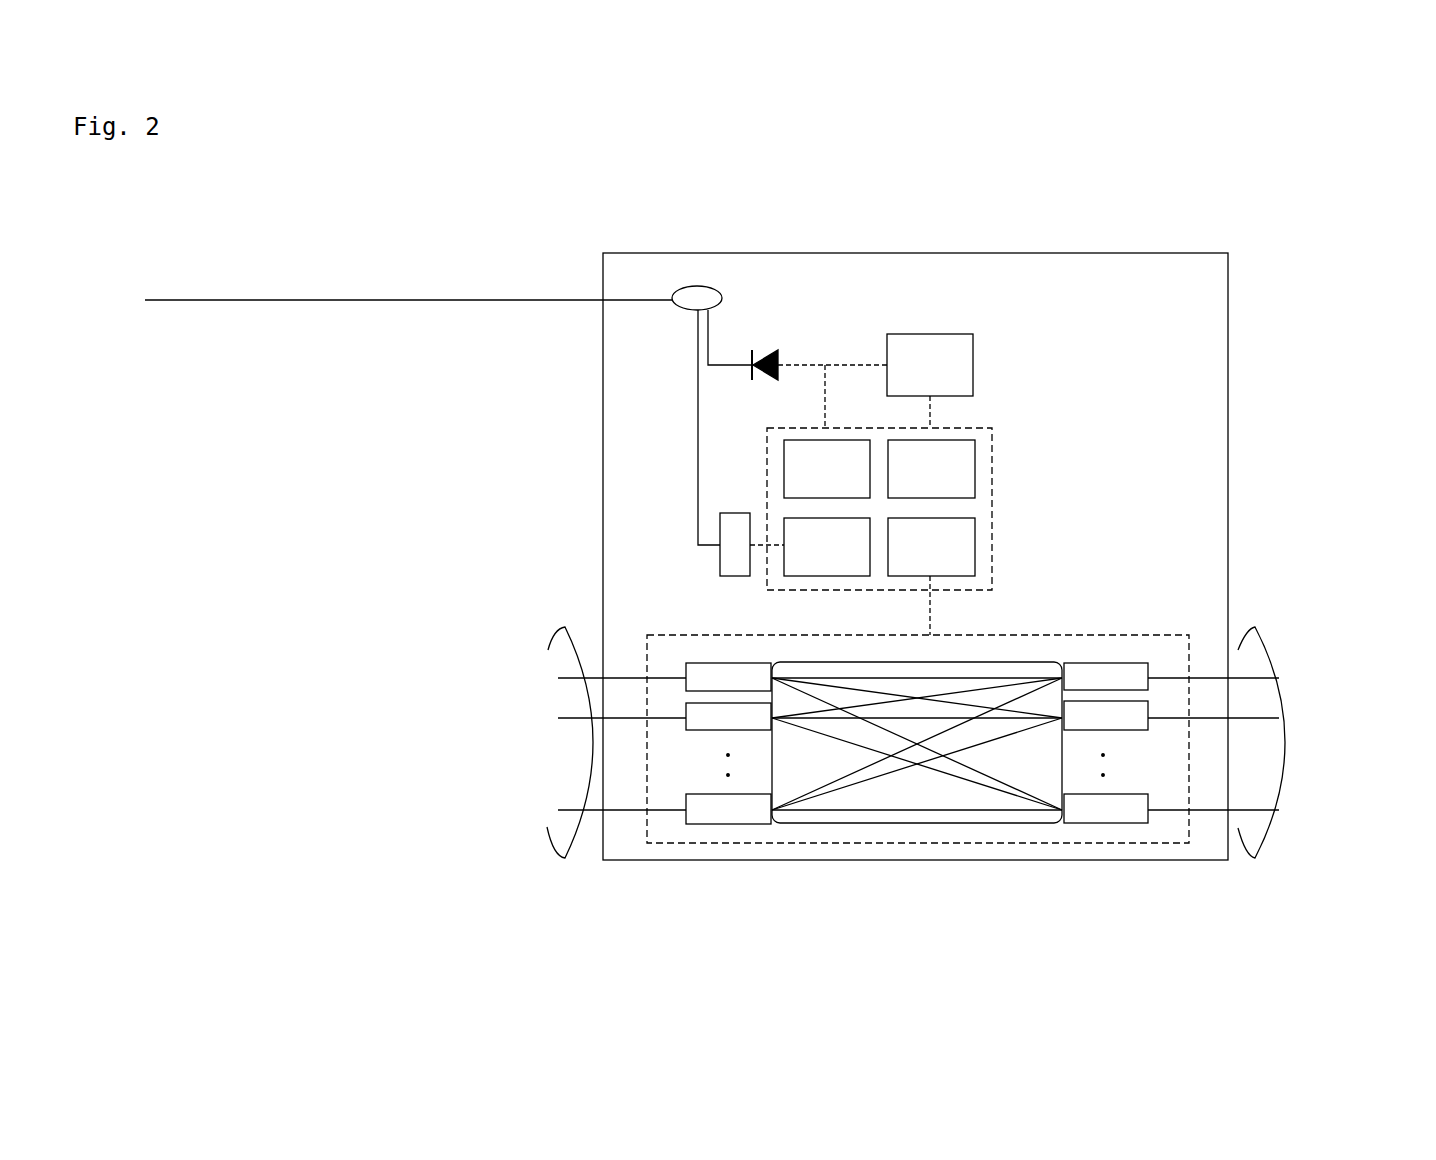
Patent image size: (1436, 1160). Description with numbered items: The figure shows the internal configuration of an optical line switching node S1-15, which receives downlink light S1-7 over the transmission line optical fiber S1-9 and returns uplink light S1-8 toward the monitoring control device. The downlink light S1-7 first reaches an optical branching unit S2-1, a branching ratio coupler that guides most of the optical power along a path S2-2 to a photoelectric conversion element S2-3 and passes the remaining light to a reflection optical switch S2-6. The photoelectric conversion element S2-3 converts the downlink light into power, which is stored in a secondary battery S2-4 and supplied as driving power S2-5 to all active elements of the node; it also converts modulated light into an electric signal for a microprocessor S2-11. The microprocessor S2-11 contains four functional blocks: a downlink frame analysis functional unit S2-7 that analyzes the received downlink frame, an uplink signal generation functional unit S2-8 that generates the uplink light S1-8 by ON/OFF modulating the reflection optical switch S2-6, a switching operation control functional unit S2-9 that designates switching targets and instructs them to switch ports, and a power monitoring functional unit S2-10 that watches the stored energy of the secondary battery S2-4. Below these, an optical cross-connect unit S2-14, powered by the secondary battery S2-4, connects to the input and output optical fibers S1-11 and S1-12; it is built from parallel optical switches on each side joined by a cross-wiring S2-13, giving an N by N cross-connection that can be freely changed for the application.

The downlink light S1-7 is at (276, 271).
The uplink light S1-8 is at (280, 347).
The transmission line optical fiber S1-9 is at (412, 292).
The input optical fiber S1-11 is at (590, 756).
The output optical fiber S1-12 is at (1287, 755).
The optical line switching node S1-15 is at (1090, 253).
The optical branching unit S2-1 is at (706, 292).
The path S2-2 is at (690, 365).
The photoelectric conversion element S2-3 is at (767, 348).
The secondary battery S2-4 is at (955, 340).
The driving power S2-5 is at (973, 365).
The reflection optical switch S2-6 is at (718, 570).
The downlink frame analysis functional unit S2-7 is at (847, 443).
The uplink signal generation functional unit S2-8 is at (850, 567).
The switching operation control functional unit S2-9 is at (977, 548).
The power monitoring functional unit S2-10 is at (977, 472).
The microprocessor S2-11 is at (990, 435).
The cross-wiring S2-13 is at (918, 825).
The optical cross-connect unit S2-14 is at (980, 860).